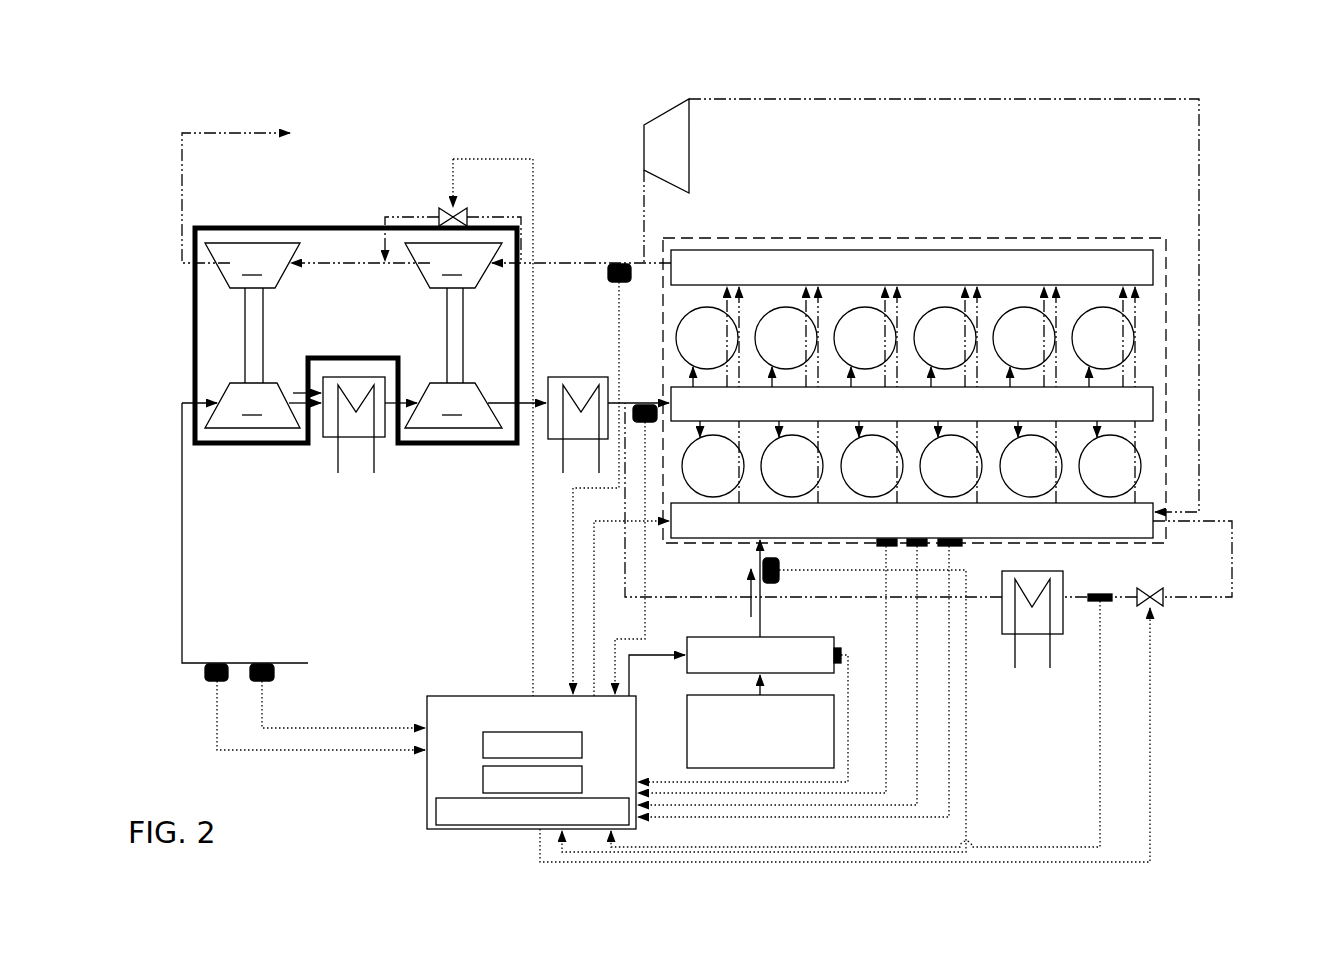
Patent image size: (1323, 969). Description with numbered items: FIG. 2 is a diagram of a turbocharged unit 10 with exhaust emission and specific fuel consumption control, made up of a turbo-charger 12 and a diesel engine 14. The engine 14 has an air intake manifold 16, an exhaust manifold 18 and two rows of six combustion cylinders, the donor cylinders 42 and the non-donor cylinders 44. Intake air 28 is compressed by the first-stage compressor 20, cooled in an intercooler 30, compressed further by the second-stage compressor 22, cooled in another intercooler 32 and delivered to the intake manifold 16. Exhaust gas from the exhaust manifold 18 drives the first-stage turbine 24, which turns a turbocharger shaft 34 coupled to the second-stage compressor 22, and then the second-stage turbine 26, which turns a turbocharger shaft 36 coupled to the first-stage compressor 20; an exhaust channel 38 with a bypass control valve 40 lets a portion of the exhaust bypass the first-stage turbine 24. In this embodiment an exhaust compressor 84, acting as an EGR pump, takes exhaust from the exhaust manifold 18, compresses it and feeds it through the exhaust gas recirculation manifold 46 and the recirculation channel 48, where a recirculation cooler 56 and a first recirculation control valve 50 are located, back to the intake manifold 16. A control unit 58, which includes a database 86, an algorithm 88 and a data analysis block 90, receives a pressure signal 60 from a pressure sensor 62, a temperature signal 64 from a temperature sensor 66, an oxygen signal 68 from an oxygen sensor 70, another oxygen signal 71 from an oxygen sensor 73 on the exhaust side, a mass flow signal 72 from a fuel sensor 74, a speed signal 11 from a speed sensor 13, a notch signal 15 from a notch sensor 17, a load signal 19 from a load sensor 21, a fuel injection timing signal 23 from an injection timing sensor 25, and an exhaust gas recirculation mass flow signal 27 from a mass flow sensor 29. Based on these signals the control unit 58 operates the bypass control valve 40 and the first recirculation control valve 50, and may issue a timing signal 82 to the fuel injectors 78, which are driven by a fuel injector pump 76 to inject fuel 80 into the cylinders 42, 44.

The turbocharged unit 10 is at (1232, 126).
The speed signal 11 is at (886, 667).
The turbo-charger 12 is at (318, 228).
The speed sensor 13 is at (880, 549).
The diesel engine 14 is at (752, 238).
The notch signal 15 is at (917, 667).
The air intake manifold 16 is at (1140, 387).
The notch sensor 17 is at (913, 552).
The exhaust manifold 18 is at (1080, 250).
The load signal 19 is at (949, 667).
The first-stage compressor 20 is at (252, 405).
The load sensor 21 is at (958, 547).
The second-stage compressor 22 is at (453, 405).
The fuel injection timing signal 23 is at (848, 680).
The first-stage turbine 24 is at (453, 265).
The injection timing sensor 25 is at (840, 648).
The second-stage turbine 26 is at (252, 265).
The exhaust gas recirculation mass flow signal 27 is at (1098, 710).
The intake air 28 is at (294, 389).
The mass flow sensor 29 is at (1106, 602).
The intercooler 30 is at (326, 440).
The intercooler 32 is at (553, 440).
The turbocharger shaft 34 is at (446, 322).
The turbocharger shaft 36 is at (264, 324).
The exhaust channel 38 is at (495, 217).
The bypass control valve 40 is at (444, 211).
The donor cylinders 42 is at (760, 471).
The non-donor cylinders 44 is at (688, 320).
The exhaust gas recirculation manifold 46 is at (1140, 503).
The recirculation channel 48 is at (1200, 598).
The first recirculation control valve 50 is at (1152, 589).
The recirculation cooler 56 is at (1005, 634).
The control unit 58 is at (456, 696).
The pressure signal 60 is at (376, 728).
The pressure sensor 62 is at (275, 672).
The temperature signal 64 is at (305, 750).
The temperature sensor 66 is at (213, 682).
The oxygen signal 68 is at (638, 632).
The oxygen sensor 70 is at (646, 405).
The oxygen signal 71 is at (572, 602).
The mass flow signal 72 is at (969, 756).
The oxygen sensor 73 is at (611, 280).
The fuel sensor 74 is at (781, 578).
The fuel injector pump 76 is at (834, 752).
The fuel injectors 78 is at (780, 637).
The fuel 80 is at (744, 590).
The timing signal 82 is at (672, 658).
The exhaust compressor 84 is at (690, 150).
The database 86 is at (583, 745).
The algorithm 88 is at (583, 780).
The data analysis block 90 is at (435, 811).